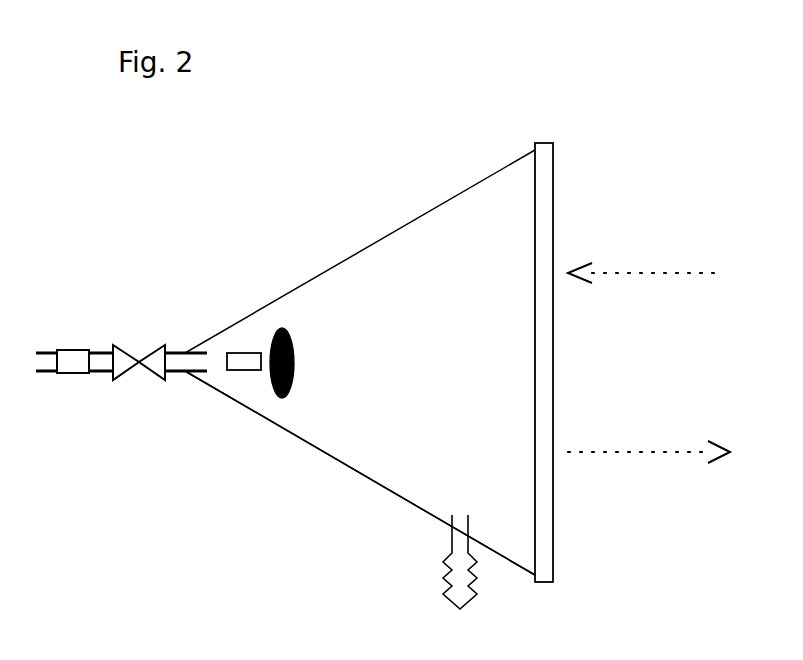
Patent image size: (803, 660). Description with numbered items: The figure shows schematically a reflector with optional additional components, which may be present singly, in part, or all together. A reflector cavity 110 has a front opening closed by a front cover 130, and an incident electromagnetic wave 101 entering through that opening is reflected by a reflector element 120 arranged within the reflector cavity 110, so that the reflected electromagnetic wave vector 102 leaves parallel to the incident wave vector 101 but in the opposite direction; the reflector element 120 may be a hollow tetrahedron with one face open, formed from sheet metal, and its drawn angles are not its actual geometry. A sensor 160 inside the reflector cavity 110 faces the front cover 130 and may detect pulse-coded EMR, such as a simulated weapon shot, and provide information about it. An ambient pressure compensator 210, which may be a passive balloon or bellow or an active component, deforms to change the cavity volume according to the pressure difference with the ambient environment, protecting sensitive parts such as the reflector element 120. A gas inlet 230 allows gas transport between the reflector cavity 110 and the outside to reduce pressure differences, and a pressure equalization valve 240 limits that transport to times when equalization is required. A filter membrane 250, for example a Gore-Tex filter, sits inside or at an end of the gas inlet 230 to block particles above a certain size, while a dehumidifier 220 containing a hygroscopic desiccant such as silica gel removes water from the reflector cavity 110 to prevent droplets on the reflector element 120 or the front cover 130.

The incident electromagnetic wave 101 is at (643, 253).
The reflected electromagnetic wave vector 102 is at (649, 433).
The reflector cavity 110 is at (452, 374).
The reflector element 120 is at (309, 463).
The front cover 130 is at (571, 547).
The sensor 160 is at (297, 322).
The ambient pressure compensator 210 is at (426, 586).
The dehumidifier 220 is at (246, 334).
The gas inlet 230 is at (181, 328).
The pressure equalization valve 240 is at (136, 387).
The filter membrane 250 is at (74, 328).